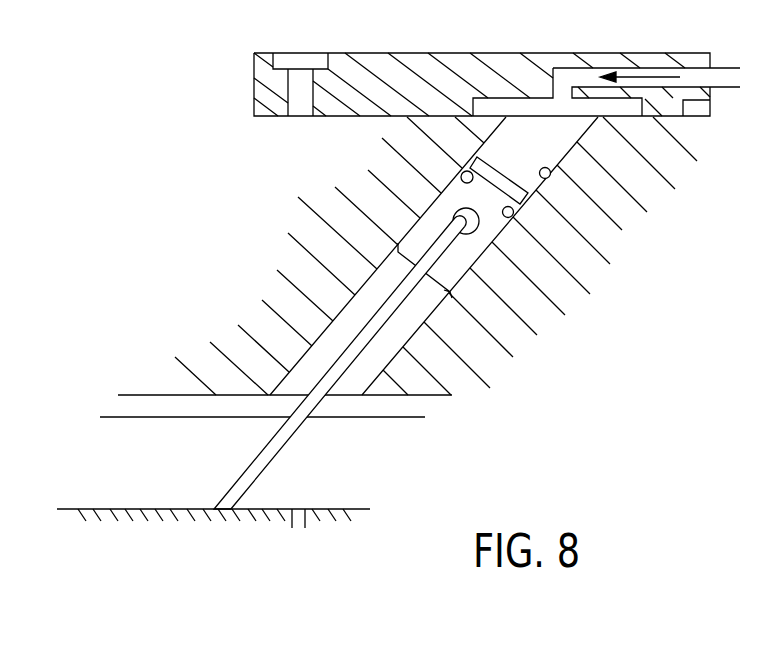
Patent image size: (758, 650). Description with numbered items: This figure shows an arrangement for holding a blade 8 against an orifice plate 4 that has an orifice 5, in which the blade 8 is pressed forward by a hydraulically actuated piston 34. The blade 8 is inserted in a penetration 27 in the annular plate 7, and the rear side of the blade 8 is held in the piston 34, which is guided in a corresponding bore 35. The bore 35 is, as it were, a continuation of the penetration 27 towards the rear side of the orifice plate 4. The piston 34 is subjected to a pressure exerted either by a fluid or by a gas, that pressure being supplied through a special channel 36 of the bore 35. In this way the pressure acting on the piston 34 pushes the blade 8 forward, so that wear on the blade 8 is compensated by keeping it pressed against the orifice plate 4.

The orifice plate 4 is at (95, 517).
The orifice 5 is at (298, 527).
The annular plate 7 is at (340, 255).
The blade 8 is at (265, 464).
The penetration 27 is at (348, 338).
The piston 34 is at (427, 230).
The bore 35 is at (553, 181).
The channel 36 is at (564, 76).